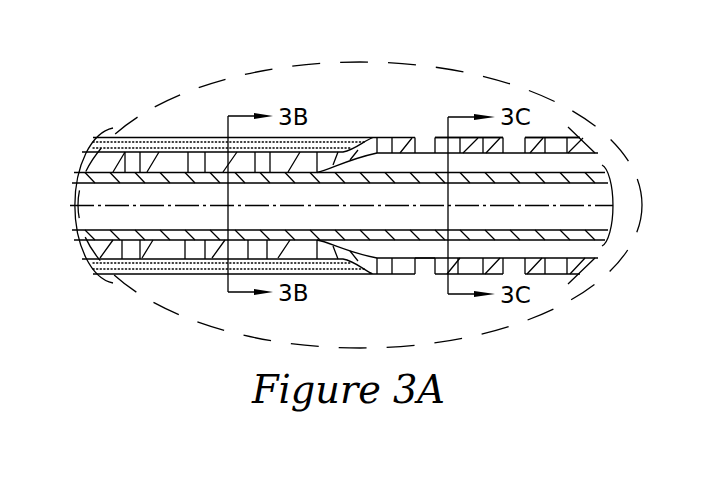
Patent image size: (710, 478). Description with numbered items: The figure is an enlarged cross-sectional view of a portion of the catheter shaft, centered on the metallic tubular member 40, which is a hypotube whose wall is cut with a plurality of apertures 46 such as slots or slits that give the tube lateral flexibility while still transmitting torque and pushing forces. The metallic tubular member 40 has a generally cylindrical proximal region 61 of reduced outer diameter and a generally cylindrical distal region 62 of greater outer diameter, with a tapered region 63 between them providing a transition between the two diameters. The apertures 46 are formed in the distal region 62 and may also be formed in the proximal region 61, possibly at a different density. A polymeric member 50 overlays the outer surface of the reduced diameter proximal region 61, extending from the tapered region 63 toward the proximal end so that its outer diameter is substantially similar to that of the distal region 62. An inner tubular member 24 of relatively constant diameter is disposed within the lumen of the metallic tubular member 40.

The inner tubular member 24 is at (589, 232).
The metallic tubular member 40 is at (567, 153).
The apertures 46 is at (427, 268).
The polymeric member 50 is at (129, 143).
The proximal region 61 is at (172, 118).
The distal region 62 is at (546, 127).
The tapered region 63 is at (390, 108).